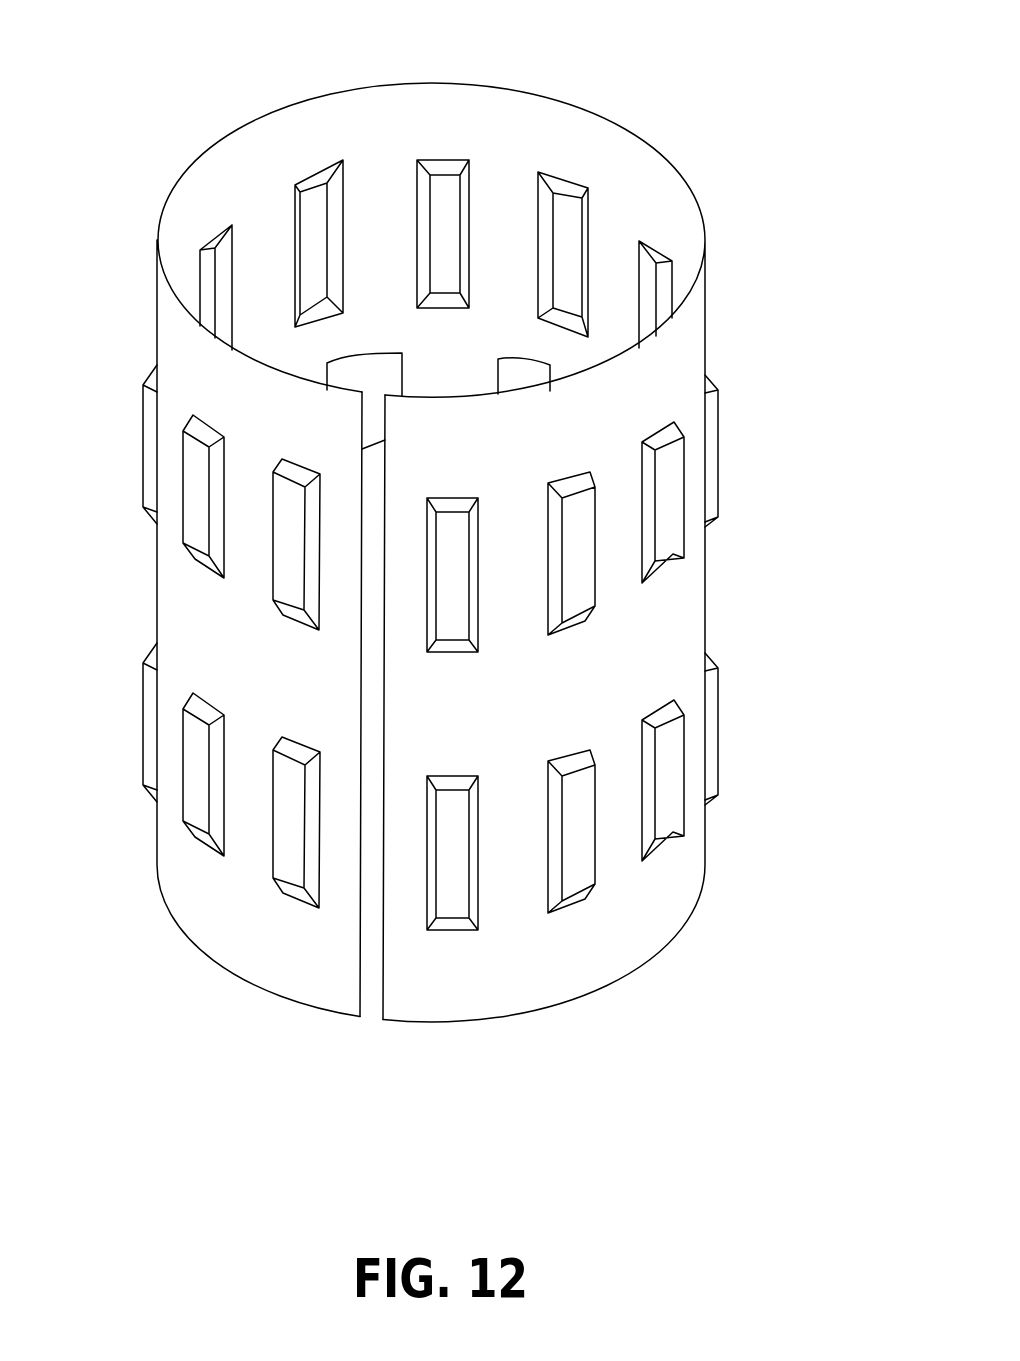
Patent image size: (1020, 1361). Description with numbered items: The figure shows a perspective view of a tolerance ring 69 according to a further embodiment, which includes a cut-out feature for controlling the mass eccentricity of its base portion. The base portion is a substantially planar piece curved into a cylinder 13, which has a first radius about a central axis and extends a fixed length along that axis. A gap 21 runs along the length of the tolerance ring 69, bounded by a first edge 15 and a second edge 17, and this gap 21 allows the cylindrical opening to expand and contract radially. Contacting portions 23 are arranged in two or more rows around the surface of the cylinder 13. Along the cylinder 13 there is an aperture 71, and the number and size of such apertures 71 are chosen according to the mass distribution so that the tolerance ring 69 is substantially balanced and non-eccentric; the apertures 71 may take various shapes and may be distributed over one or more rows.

The tolerance ring 69 is at (745, 156).
The cylinder 13 is at (663, 372).
The gap 21 is at (368, 925).
The first edge 15 is at (335, 980).
The second edge 17 is at (407, 980).
The aperture 71 is at (363, 365).
The contacting portions 23 is at (660, 550).